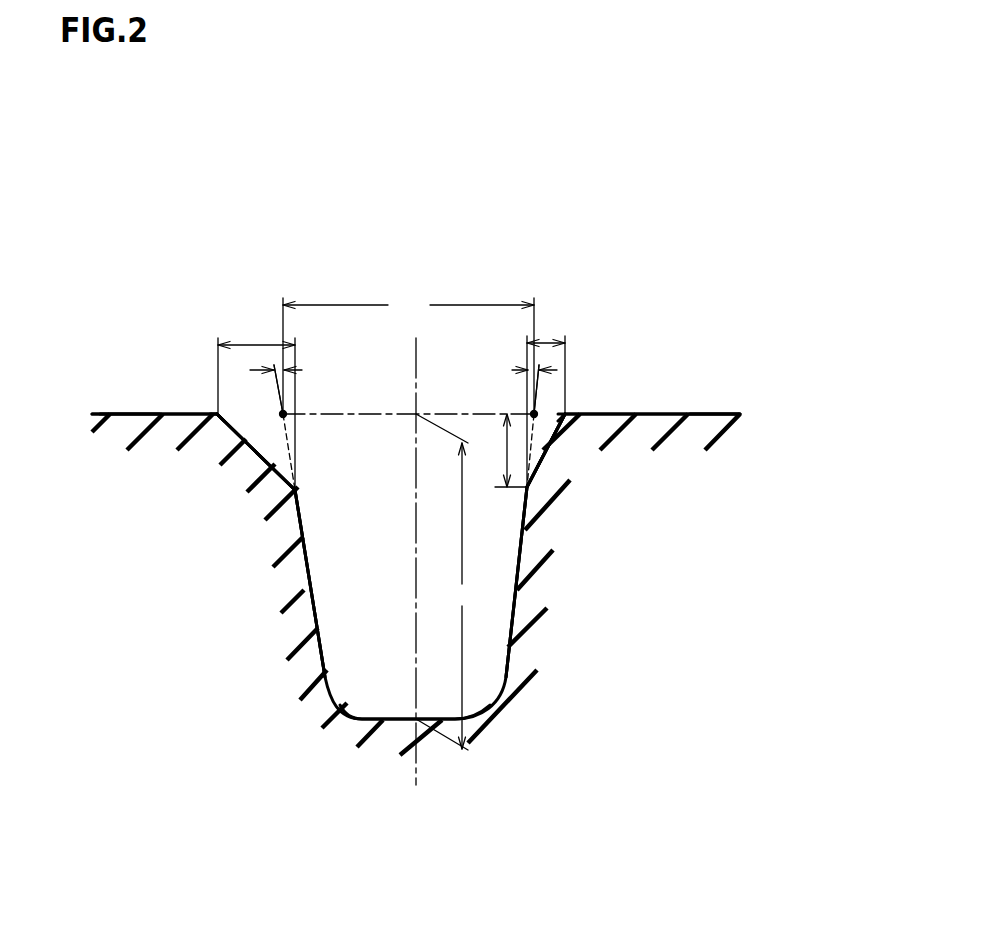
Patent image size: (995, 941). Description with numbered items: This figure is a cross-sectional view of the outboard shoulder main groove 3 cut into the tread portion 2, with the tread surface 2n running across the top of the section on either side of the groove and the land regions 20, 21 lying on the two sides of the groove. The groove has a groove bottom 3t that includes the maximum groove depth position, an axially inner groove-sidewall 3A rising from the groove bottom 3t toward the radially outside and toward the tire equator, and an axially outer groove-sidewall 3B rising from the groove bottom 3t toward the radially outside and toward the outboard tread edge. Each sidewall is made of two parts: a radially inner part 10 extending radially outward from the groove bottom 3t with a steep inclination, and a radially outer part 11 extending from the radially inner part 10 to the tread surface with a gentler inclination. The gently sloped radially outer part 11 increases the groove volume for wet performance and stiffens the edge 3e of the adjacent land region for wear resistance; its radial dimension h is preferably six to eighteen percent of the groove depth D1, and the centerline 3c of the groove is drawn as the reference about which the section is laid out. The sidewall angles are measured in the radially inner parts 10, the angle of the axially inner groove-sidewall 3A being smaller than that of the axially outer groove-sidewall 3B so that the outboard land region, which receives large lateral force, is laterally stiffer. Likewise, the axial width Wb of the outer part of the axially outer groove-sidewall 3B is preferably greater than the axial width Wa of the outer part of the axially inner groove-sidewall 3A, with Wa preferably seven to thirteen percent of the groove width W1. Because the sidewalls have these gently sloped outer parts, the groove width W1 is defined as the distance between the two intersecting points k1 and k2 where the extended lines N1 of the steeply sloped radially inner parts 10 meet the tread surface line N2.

The tread portion 2 is at (603, 227).
The tread surface 2n is at (123, 413).
The outboard shoulder main groove 3 is at (363, 574).
The axially inner groove-sidewall 3A is at (713, 598).
The axially outer groove-sidewall 3B is at (97, 568).
The groove center line 3c is at (417, 375).
The edge of the land region 3e is at (218, 413).
The groove bottom 3t is at (395, 720).
The radially inner part 10 is at (305, 592).
The radially outer part 11 is at (278, 448).
The land portion (tread surface) on one side 20 is at (137, 413).
The land portion (tread surface) on other side 21 is at (695, 413).
The intersecting point k1 is at (543, 447).
The intersecting point k2 is at (237, 433).
The extended line of the radially inner part N1 is at (288, 433).
The tread surface line N2 is at (355, 413).
The groove width W1 is at (408, 353).
The axial width of the radially outer part of the axially inner groove-sidewall Wa is at (552, 388).
The axial width of the radially outer part of the axially outer groove-sidewall Wb is at (256, 401).
The groove depth D1 is at (446, 582).
The radial dimension of the radially outer part h is at (506, 450).